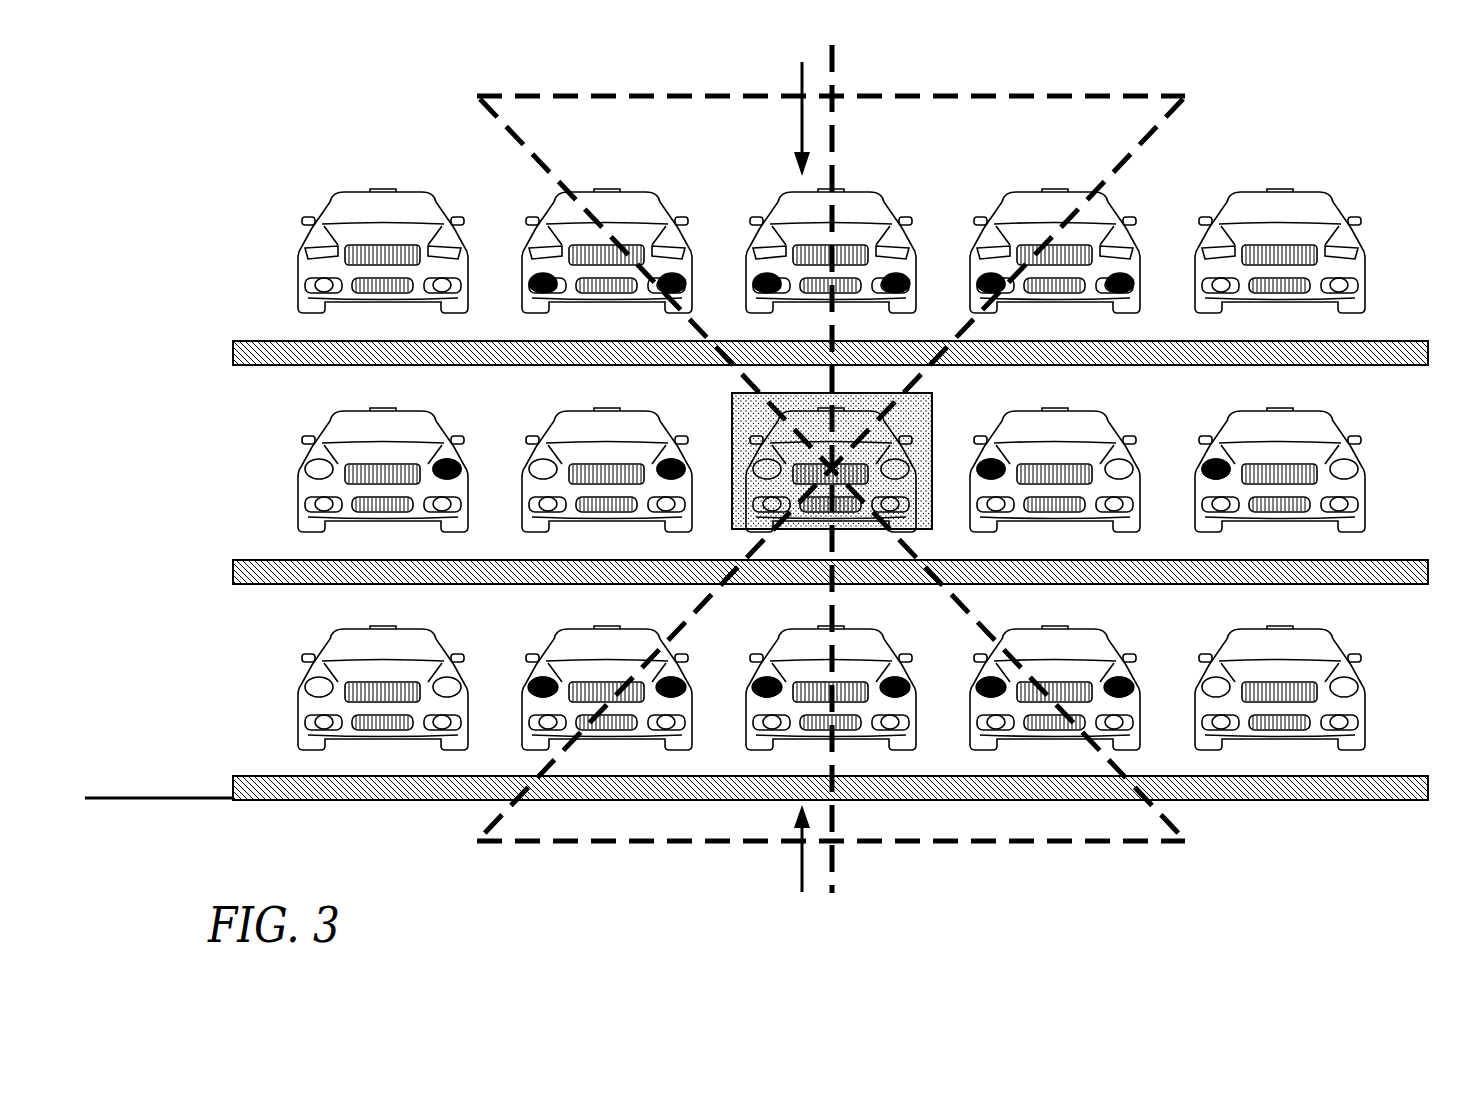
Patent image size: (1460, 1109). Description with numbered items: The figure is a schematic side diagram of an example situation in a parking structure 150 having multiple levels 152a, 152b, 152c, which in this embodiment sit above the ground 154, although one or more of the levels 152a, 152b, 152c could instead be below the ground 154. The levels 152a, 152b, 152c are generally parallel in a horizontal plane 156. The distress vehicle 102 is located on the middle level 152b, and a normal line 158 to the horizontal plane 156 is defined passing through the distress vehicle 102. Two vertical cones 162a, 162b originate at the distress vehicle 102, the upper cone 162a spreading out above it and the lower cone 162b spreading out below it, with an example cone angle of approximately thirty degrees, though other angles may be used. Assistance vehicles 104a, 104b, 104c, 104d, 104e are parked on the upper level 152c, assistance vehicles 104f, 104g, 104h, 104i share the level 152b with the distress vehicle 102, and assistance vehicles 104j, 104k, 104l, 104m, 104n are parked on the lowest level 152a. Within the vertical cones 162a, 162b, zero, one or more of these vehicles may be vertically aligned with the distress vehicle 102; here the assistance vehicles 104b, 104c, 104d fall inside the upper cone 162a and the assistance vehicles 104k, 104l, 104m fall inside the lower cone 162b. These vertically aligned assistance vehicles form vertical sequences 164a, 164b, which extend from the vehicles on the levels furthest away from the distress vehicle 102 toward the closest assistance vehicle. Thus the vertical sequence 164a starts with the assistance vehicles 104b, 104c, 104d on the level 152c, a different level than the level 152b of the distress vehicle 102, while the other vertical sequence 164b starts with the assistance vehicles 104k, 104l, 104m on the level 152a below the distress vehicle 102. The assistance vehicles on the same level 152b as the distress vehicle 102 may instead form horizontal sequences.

The parking structure 150 is at (393, 81).
The distress vehicle 102 is at (732, 415).
The assistance vehicle 104a is at (331, 199).
The assistance vehicle 104b is at (553, 200).
The assistance vehicle 104c is at (778, 200).
The assistance vehicle 104d is at (1110, 201).
The assistance vehicle 104e is at (1333, 201).
The assistance vehicle 104f is at (331, 419).
The assistance vehicle 104g is at (554, 420).
The assistance vehicle 104h is at (1108, 420).
The assistance vehicle 104i is at (1333, 420).
The assistance vehicle 104j is at (331, 638).
The assistance vehicle 104k is at (554, 638).
The assistance vehicle 104l is at (778, 638).
The assistance vehicle 104m is at (1108, 638).
The assistance vehicle 104n is at (1333, 638).
The level 152a is at (245, 776).
The level 152b is at (250, 560).
The level 152c is at (250, 341).
The ground 154 is at (1405, 776).
The horizontal plane 156 is at (185, 797).
The normal line 158 is at (838, 80).
The vertical cone 162a is at (510, 95).
The vertical cone 162b is at (510, 843).
The vertical sequence 164a is at (800, 80).
The vertical sequence 164b is at (800, 860).